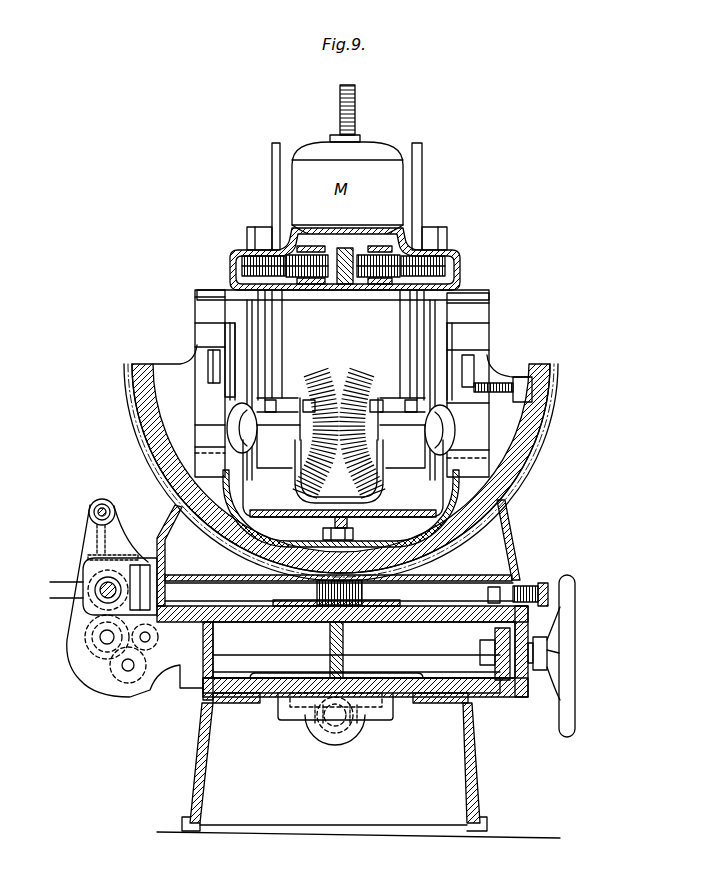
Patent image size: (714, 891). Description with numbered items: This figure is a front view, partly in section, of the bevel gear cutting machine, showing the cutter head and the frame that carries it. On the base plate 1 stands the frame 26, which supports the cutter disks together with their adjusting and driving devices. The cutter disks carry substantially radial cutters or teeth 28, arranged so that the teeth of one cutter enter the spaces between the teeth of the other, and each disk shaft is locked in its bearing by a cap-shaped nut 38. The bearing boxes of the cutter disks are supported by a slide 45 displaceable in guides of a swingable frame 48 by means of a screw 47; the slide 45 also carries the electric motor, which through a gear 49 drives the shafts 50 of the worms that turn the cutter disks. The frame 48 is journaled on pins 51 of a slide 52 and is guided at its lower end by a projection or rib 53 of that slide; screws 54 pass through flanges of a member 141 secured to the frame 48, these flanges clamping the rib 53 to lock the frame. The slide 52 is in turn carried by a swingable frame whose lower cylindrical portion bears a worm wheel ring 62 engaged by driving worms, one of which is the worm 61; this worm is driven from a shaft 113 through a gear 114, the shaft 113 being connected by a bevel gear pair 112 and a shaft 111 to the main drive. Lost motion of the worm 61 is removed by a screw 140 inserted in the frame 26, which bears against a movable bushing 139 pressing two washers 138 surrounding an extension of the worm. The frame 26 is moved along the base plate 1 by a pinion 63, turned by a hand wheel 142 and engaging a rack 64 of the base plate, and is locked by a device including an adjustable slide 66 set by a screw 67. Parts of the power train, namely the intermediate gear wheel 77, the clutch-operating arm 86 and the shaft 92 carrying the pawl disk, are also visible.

The base plate 1 is at (190, 800).
The frame 26 is at (200, 693).
The cutters or teeth 28 is at (316, 370).
The nut 38 is at (236, 418).
The slide 45 is at (408, 152).
The screw 47 is at (355, 115).
The swingable frame 48 is at (252, 230).
The gear 49 is at (232, 266).
The shafts 50 is at (264, 335).
The pins 51 is at (208, 360).
The slide 52 is at (222, 492).
The projection or rib 53 is at (294, 492).
The screws 54 is at (353, 533).
The driving worm 61 is at (322, 620).
The worm wheel ring 62 is at (137, 448).
The pinion 63 is at (330, 655).
The rack 64 is at (317, 696).
The adjustable slide 66 is at (367, 708).
The screw 67 is at (334, 722).
The intermediate gear wheel 77 is at (122, 682).
The arm 86 is at (102, 645).
The shaft 92 is at (92, 505).
The shaft 111 is at (100, 590).
The bevel gear pair 112 is at (92, 583).
The shaft 113 is at (180, 590).
The gear 114 is at (228, 622).
The washers 138 is at (502, 584).
The movable bushing 139 is at (521, 563).
The screw 140 is at (548, 593).
The member 141 is at (384, 492).
The hand wheel 142 is at (568, 702).